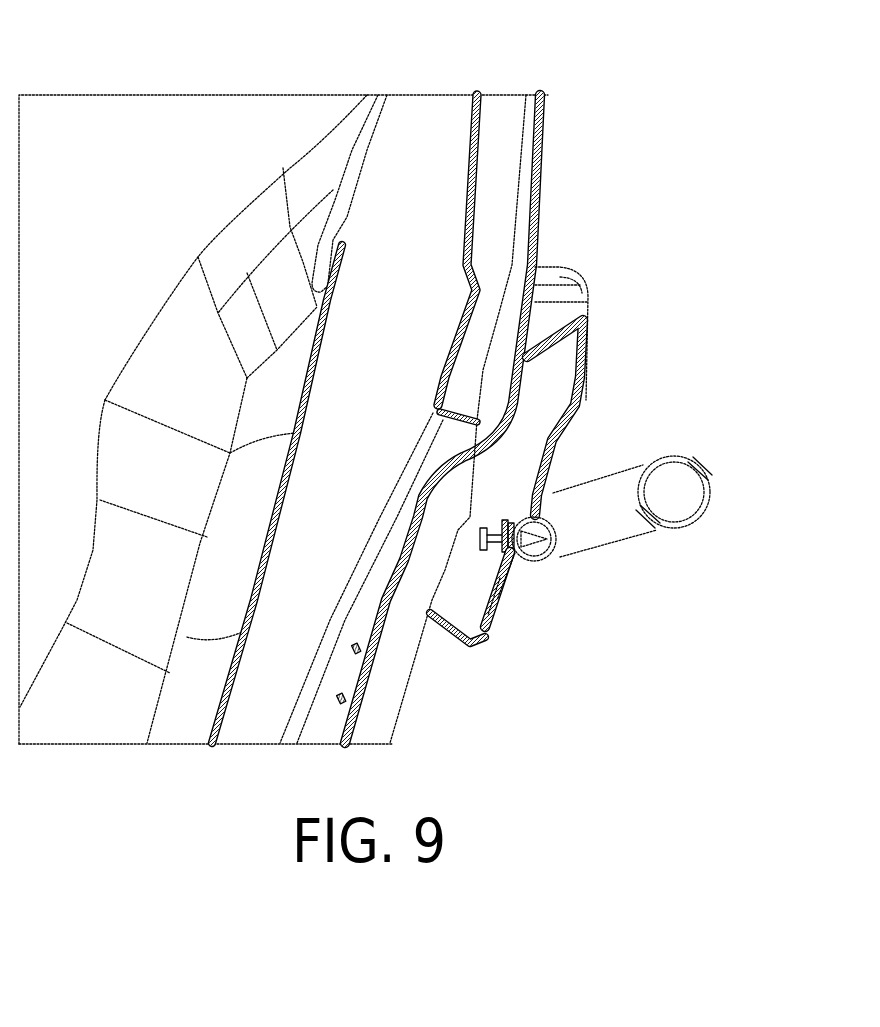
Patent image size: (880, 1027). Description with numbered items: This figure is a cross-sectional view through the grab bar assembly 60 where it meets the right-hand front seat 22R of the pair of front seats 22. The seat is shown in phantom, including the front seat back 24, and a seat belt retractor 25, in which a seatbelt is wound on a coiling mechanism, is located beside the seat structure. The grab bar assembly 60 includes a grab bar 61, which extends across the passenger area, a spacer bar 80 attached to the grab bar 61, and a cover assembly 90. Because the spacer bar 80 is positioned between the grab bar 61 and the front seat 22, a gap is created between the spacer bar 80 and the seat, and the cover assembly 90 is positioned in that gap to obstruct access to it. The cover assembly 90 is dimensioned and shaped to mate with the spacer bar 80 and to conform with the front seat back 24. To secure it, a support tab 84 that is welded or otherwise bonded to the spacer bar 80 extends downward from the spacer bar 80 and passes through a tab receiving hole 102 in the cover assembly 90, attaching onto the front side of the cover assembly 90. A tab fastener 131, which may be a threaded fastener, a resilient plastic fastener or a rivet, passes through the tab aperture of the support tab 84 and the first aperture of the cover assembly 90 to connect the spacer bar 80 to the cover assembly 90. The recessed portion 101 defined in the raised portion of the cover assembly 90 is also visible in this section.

The front seat 22R is at (203, 380).
The front seat 22 is at (190, 221).
The front seat back 24 is at (370, 678).
The seat belt retractor 25 is at (570, 275).
The grab bar assembly 60 is at (654, 481).
The grab bar 61 is at (641, 532).
The spacer bar 80 is at (560, 548).
The support tab 84 is at (514, 632).
The cover assembly 90 is at (568, 433).
The recessed portion 101 is at (493, 593).
The tab receiving hole 102 is at (514, 560).
The tab fastener 131 is at (492, 528).